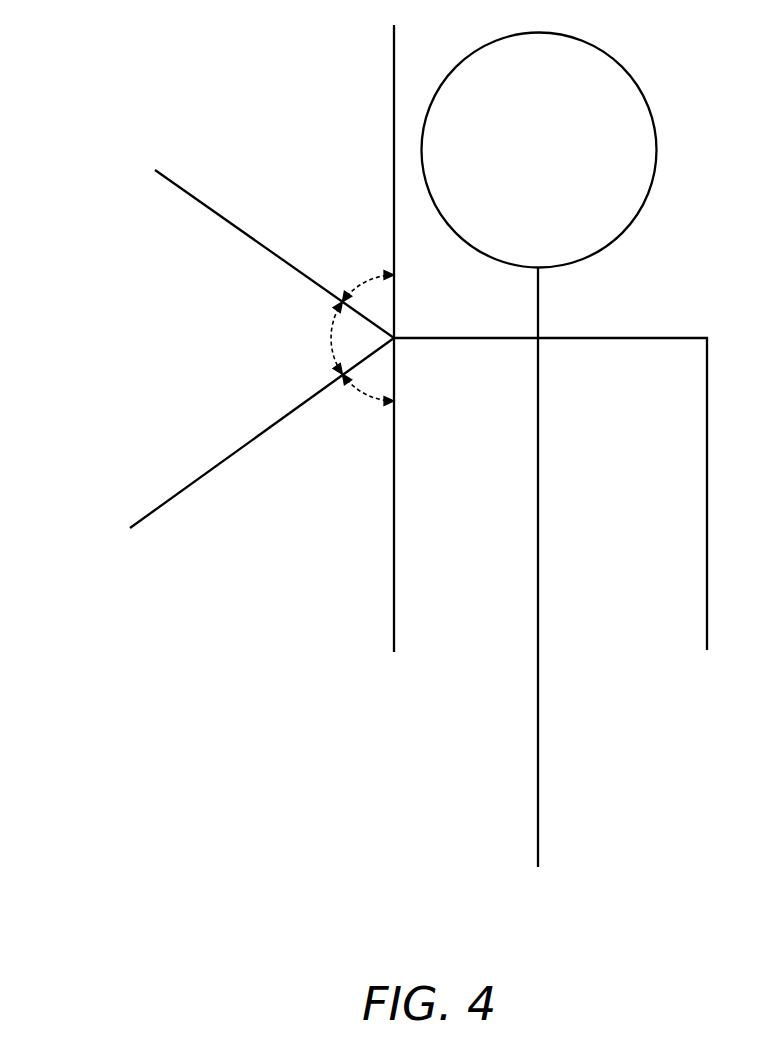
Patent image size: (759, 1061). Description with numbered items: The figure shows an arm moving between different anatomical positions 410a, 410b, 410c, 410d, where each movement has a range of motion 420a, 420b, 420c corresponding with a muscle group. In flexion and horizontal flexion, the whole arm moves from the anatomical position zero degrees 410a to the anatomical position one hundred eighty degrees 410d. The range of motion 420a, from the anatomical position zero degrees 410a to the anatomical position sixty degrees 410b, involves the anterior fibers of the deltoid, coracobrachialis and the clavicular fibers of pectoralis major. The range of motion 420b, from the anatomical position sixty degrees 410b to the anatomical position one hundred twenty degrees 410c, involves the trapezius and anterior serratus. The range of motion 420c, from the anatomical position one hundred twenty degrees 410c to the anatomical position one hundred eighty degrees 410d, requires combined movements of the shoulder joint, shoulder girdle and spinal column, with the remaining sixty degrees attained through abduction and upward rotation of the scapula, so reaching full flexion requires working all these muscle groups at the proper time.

The anatomical position 0 degrees 410a is at (394, 652).
The anatomical position 60 degrees 410b is at (130, 528).
The anatomical position 120 degrees 410c is at (155, 170).
The anatomical position 180 degrees 410d is at (394, 25).
The range of motion 420a is at (365, 397).
The range of motion 420b is at (330, 344).
The range of motion 420c is at (372, 278).